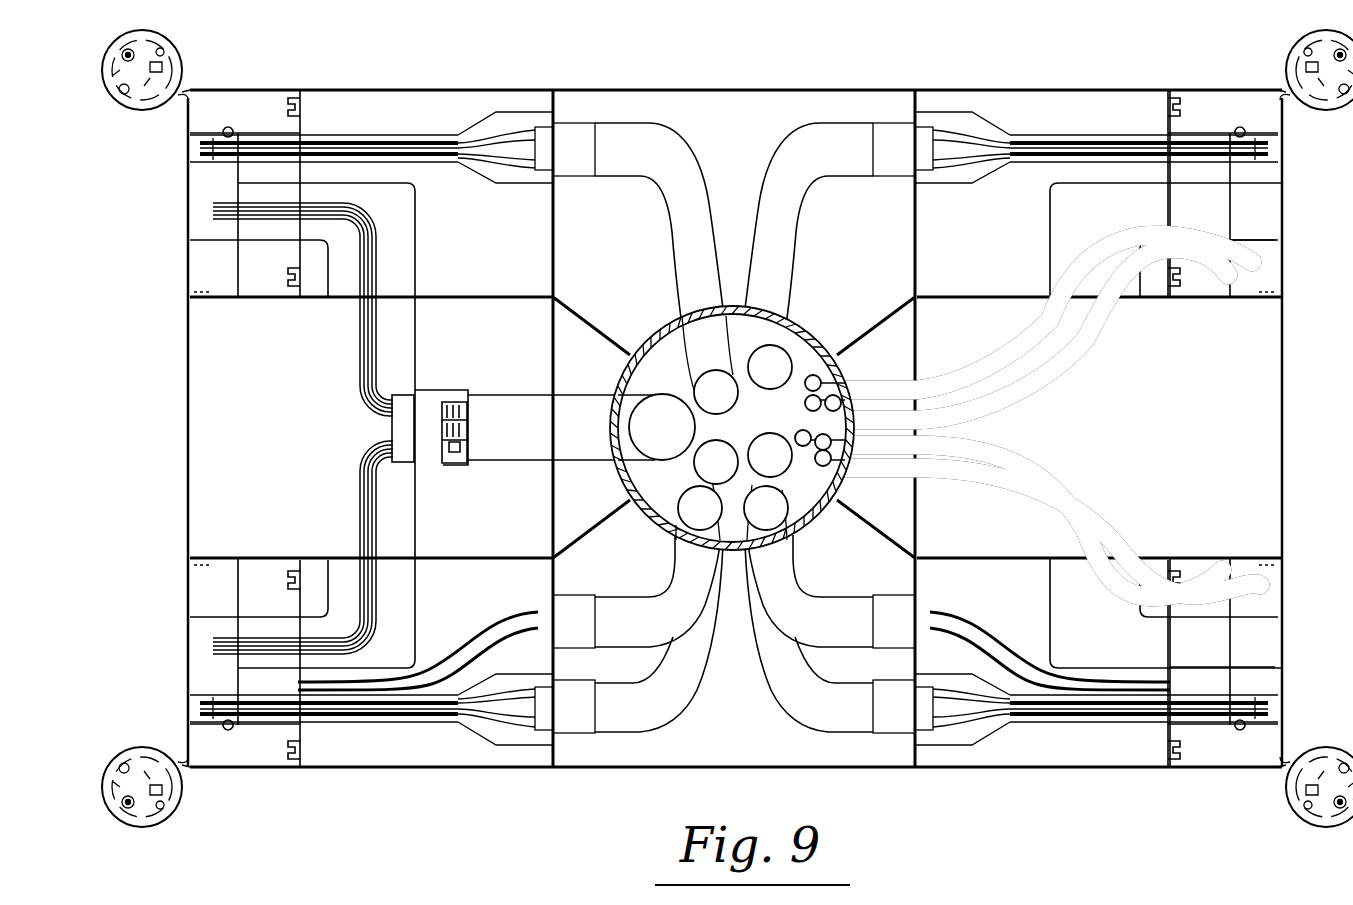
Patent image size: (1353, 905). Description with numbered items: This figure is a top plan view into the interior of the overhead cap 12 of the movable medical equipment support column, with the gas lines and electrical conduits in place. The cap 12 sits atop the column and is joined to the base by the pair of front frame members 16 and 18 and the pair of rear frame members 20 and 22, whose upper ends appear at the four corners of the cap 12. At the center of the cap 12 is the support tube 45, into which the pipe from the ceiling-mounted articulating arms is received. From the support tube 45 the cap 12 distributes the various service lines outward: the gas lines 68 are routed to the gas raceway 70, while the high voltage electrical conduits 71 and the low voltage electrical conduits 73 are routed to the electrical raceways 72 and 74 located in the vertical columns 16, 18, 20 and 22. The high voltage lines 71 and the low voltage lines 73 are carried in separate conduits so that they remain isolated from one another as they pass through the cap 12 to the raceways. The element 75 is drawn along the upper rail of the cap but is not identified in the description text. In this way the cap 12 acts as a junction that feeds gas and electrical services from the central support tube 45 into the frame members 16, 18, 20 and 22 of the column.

The overhead cap 12 is at (900, 88).
The front frame member 16 is at (1230, 775).
The front frame member 18 is at (242, 775).
The rear frame member 20 is at (1248, 88).
The rear frame member 22 is at (262, 88).
The support tube 45 is at (806, 320).
The gas lines 68 is at (1122, 330).
The gas raceway 70 is at (1270, 268).
The high voltage electrical conduits 71 is at (797, 140).
The electrical raceway 72 is at (205, 178).
The low voltage electrical conduits 73 is at (516, 413).
The electrical raceway 74 is at (190, 148).
The top rail 75 is at (1058, 88).